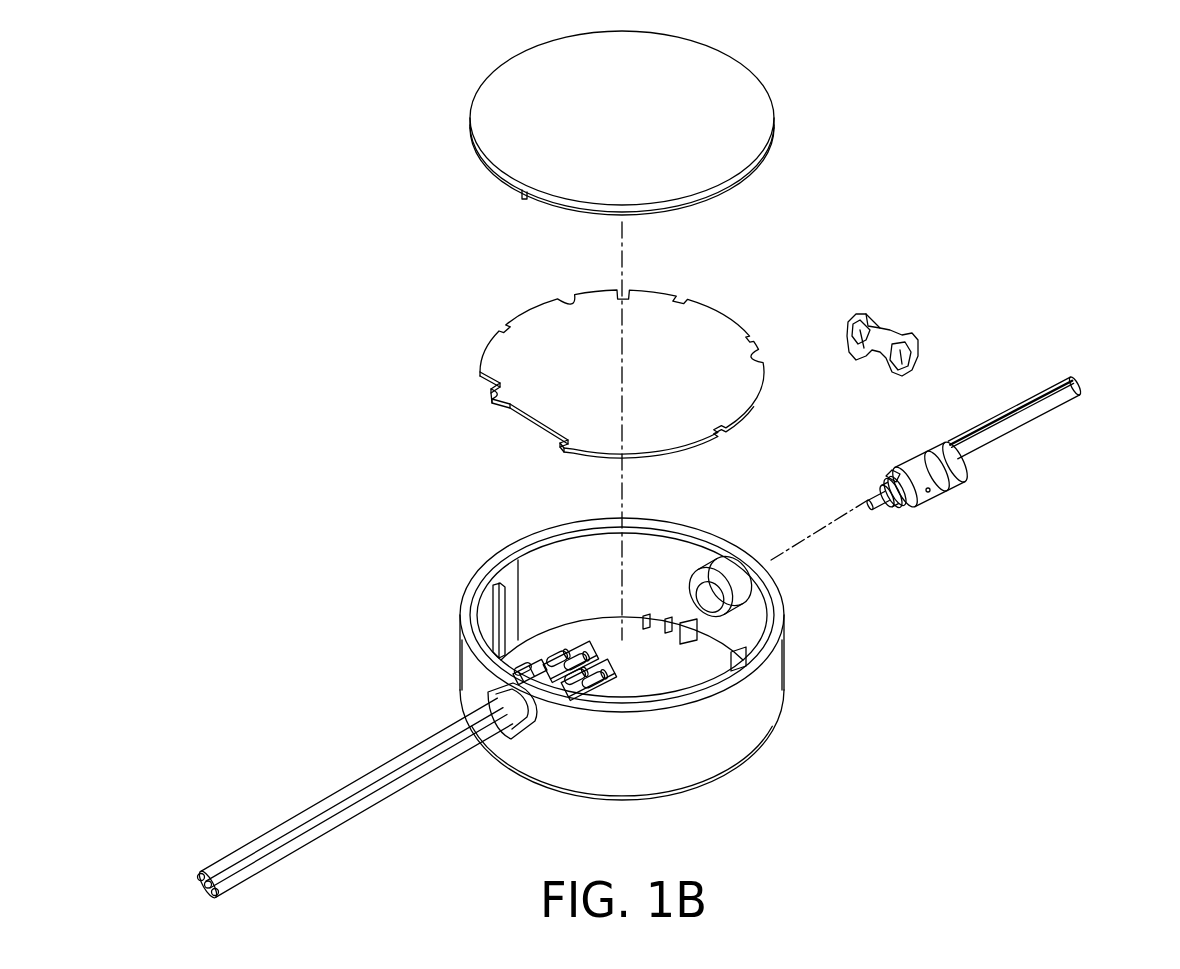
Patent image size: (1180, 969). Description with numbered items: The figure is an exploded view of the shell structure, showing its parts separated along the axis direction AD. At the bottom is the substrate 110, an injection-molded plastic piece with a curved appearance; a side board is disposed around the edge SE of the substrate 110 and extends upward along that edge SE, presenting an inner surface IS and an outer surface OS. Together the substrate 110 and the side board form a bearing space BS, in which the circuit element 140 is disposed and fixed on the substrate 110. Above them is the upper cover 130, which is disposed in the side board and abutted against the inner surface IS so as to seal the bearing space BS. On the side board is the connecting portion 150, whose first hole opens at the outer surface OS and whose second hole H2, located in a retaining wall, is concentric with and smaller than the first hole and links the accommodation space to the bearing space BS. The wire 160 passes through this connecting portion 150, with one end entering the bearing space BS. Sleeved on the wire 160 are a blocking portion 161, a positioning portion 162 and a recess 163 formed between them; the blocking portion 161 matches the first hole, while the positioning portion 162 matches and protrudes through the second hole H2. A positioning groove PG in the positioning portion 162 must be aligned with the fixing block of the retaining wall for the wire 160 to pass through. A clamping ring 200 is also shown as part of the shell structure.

The substrate 110 is at (678, 676).
The upper cover 130 is at (728, 86).
The circuit element 140 is at (695, 336).
The connecting portion 150 is at (717, 546).
The wire 160 is at (1047, 412).
The blocking portion 161 is at (955, 487).
The positioning portion 162 is at (895, 502).
The recess 163 is at (918, 506).
The clamping ring 200 is at (929, 346).
The axis direction AD is at (618, 245).
The positioning groove PG is at (889, 469).
The second hole H2 is at (688, 580).
The inner surface IS is at (541, 595).
The outer surface OS is at (763, 691).
The bearing space BS is at (649, 671).
The edge SE is at (695, 792).